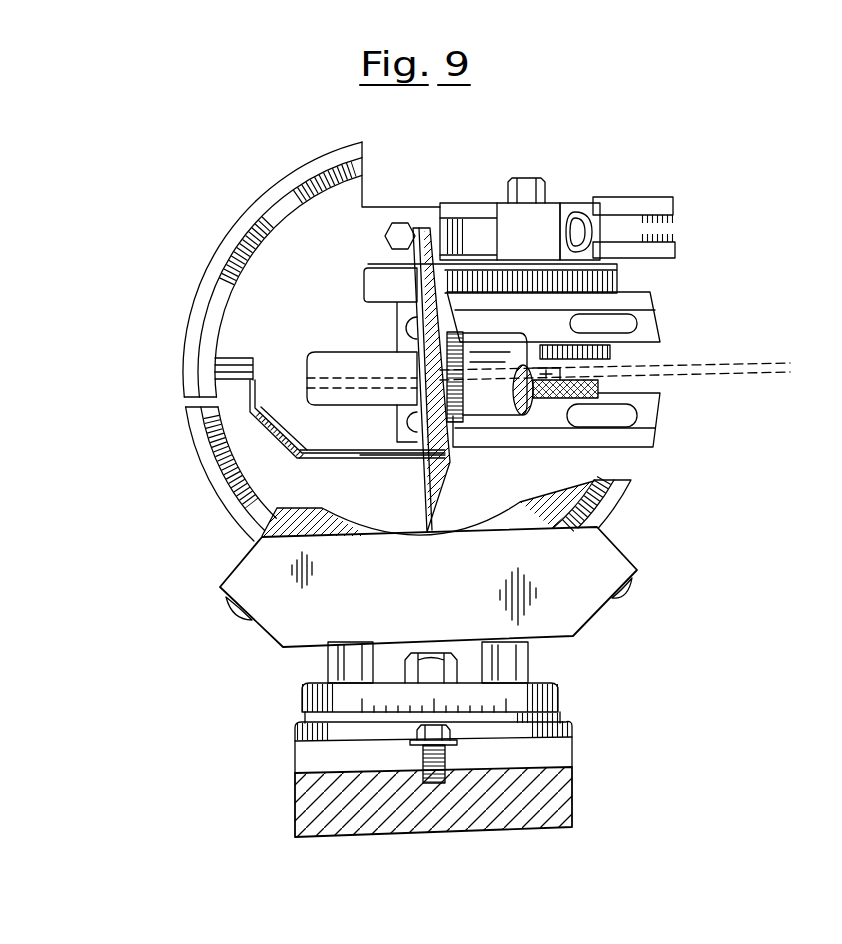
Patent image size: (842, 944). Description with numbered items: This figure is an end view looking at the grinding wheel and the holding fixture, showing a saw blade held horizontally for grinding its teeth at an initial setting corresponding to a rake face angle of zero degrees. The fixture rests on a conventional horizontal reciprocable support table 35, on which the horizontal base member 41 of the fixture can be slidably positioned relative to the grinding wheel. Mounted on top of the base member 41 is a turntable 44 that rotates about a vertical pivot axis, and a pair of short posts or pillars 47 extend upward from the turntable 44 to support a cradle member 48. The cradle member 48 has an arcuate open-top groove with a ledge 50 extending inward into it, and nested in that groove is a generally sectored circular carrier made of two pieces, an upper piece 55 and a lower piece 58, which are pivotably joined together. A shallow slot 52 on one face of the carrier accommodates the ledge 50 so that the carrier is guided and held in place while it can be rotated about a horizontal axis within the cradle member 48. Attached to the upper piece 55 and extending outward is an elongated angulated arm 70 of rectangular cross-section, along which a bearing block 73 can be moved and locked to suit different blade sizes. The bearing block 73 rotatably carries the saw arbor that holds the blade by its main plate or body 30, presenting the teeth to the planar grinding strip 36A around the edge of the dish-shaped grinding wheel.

The main plate or body 30 is at (722, 363).
The support table 35 is at (572, 813).
The grinding strip 36A is at (423, 507).
The base member 41 is at (572, 755).
The turntable 44 is at (560, 692).
The posts or pillars 47 is at (532, 660).
The cradle member 48 is at (592, 622).
The ledge 50 is at (240, 492).
The shallow slot 52 is at (308, 192).
The upper piece 55 is at (250, 204).
The lower piece 58 is at (183, 443).
The angulated arm 70 is at (632, 197).
The bearing block 73 is at (507, 213).